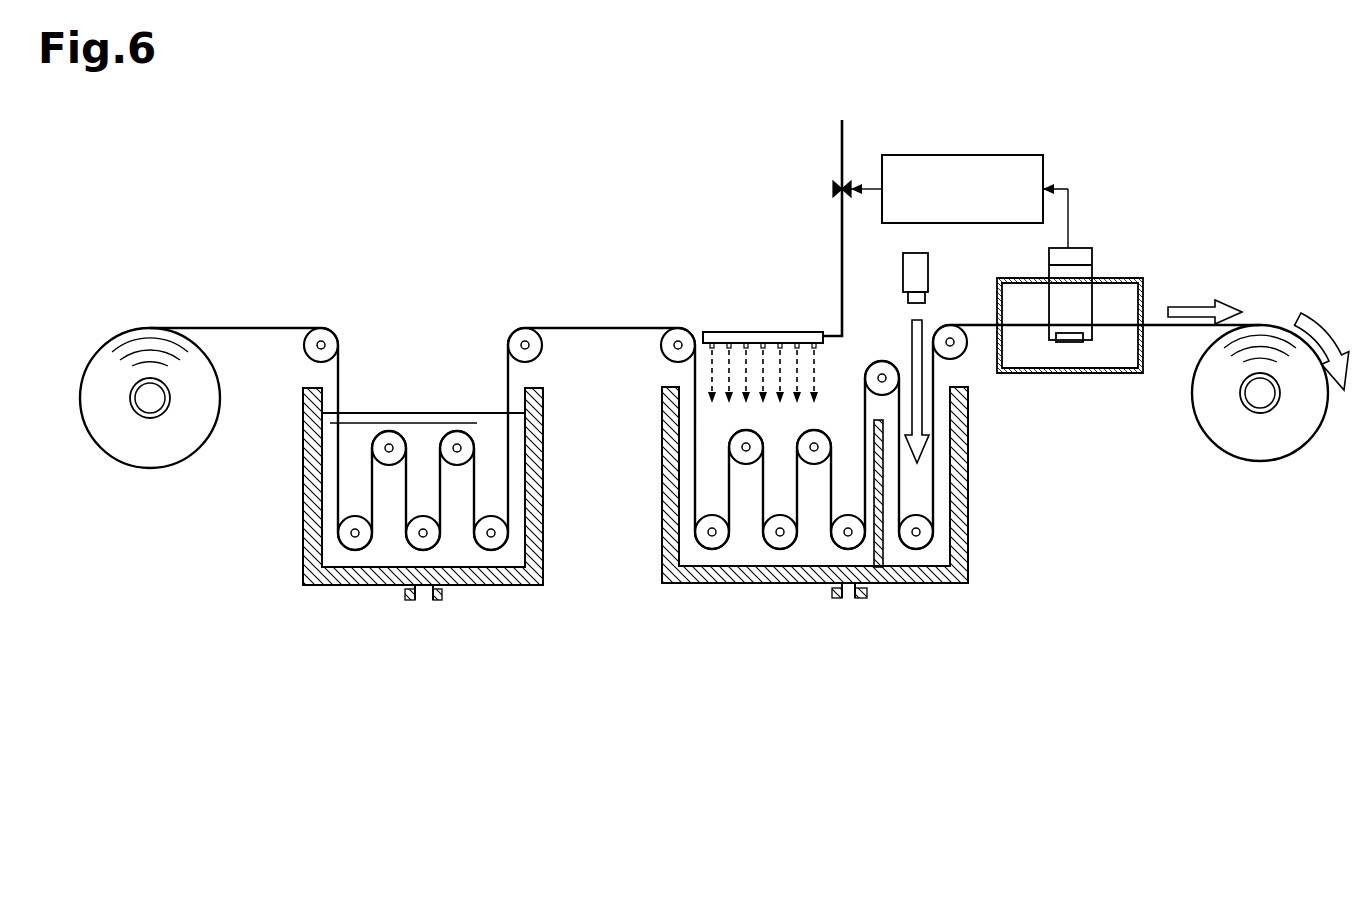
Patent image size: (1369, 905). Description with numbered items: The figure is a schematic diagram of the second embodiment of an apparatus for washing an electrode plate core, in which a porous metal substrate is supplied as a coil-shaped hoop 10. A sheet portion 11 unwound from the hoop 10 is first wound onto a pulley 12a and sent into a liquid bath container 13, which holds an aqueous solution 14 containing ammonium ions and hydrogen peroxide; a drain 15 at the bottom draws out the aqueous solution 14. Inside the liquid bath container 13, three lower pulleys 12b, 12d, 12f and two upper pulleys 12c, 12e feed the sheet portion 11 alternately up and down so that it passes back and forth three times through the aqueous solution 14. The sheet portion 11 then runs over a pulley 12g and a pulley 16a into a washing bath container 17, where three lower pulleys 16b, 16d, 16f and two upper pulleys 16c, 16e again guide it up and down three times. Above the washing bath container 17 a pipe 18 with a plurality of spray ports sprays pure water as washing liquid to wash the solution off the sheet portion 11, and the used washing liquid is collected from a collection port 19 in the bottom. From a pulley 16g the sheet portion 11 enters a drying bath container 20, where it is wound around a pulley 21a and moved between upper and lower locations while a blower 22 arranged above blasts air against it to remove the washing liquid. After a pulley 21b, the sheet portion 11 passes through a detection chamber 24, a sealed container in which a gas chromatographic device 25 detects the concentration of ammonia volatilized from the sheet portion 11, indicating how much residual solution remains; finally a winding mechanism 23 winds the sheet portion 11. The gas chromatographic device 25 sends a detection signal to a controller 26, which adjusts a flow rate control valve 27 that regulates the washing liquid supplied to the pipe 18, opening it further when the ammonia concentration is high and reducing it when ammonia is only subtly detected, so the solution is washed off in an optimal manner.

The hoop 10 is at (147, 455).
The sheet portion 11 is at (262, 327).
The pulley 12a is at (338, 341).
The pulley 12b is at (357, 550).
The pulley 12c is at (389, 431).
The pulley 12d is at (433, 545).
The pulley 12e is at (457, 431).
The pulley 12f is at (502, 547).
The pulley 12g is at (525, 333).
The liquid bath container 13 is at (303, 527).
The aqueous solution 14 is at (418, 412).
The drain 15 is at (423, 600).
The pulley 16a is at (677, 333).
The pulley 16b is at (714, 549).
The pulley 16c is at (734, 436).
The pulley 16d is at (782, 549).
The pulley 16e is at (836, 430).
The pulley 16f is at (852, 549).
The pulley 16g is at (882, 360).
The washing bath container 17 is at (679, 515).
The pipe 18 is at (775, 331).
The collection port 19 is at (848, 600).
The drying bath container 20 is at (950, 492).
The pulley 21a is at (928, 548).
The pulley 21b is at (952, 326).
The blower 22 is at (903, 273).
The winding mechanism 23 is at (1268, 412).
The detection chamber 24 is at (1122, 376).
The gas chromatographic device 25 is at (1070, 345).
The controller 26 is at (990, 155).
The flow rate control valve 27 is at (833, 189).